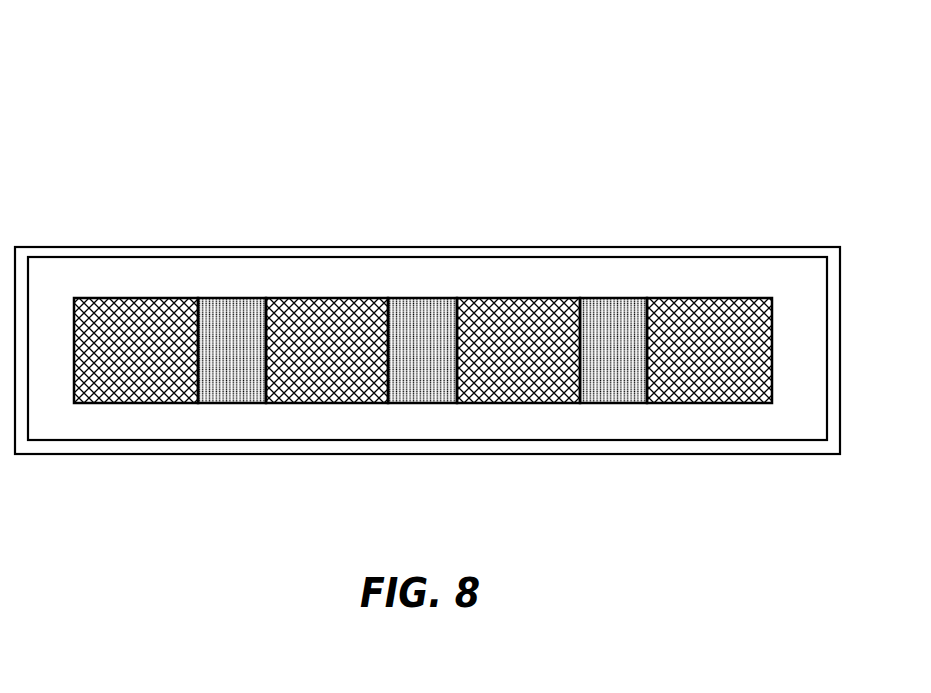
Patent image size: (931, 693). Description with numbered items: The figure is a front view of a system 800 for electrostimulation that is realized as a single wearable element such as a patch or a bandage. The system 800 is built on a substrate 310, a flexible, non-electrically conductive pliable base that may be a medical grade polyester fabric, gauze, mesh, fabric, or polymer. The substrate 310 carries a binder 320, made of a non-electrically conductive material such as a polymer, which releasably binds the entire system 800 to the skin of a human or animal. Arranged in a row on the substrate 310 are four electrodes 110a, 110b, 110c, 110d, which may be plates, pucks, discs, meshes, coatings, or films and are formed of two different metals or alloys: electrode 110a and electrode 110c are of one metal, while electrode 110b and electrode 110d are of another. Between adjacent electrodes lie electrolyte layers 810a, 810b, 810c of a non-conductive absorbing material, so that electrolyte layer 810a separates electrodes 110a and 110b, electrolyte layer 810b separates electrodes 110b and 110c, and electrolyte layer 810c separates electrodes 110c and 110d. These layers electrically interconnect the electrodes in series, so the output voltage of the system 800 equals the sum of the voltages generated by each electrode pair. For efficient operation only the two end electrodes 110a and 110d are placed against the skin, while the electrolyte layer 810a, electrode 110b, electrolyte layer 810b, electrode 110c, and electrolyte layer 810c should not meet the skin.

The system for electrostimulation 800 is at (168, 66).
The substrate 310 is at (798, 252).
The binder 320 is at (63, 277).
The electrode 110a is at (145, 330).
The electrode 110b is at (333, 330).
The electrode 110c is at (515, 330).
The electrode 110d is at (728, 330).
The electrolyte layer 810a is at (224, 327).
The electrolyte layer 810b is at (425, 330).
The electrolyte layer 810c is at (615, 330).